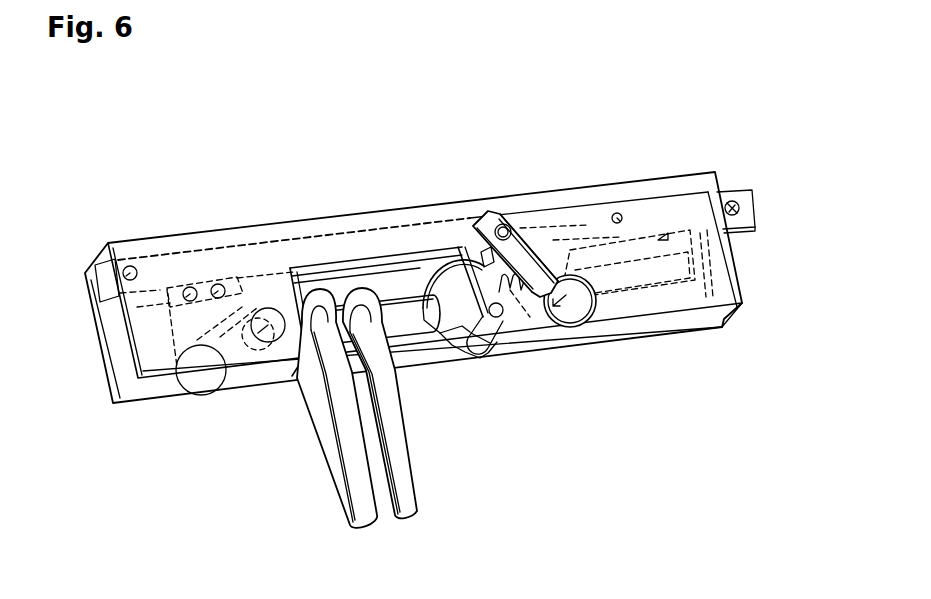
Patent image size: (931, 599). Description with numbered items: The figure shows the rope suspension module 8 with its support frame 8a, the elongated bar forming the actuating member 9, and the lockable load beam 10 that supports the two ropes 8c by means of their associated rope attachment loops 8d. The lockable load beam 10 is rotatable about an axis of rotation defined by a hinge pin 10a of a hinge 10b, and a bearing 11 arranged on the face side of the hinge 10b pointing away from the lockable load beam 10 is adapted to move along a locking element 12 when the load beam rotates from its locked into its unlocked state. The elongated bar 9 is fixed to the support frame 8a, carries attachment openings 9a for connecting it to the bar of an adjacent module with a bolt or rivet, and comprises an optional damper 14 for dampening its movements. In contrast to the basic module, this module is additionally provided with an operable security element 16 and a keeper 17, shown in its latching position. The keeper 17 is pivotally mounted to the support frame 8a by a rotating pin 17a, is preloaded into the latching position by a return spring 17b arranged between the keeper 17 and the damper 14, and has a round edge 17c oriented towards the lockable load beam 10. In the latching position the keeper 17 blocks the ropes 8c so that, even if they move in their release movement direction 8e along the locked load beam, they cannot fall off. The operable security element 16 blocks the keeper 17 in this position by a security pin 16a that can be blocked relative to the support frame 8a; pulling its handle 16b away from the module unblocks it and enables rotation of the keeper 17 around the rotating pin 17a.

The rope suspension module 8 is at (165, 194).
The support frame 8a is at (703, 322).
The ropes 8c is at (445, 524).
The rope attachment loops 8d is at (318, 386).
The release movement direction 8e is at (425, 491).
The actuating member (elongated bar) 9 is at (734, 192).
The attachment openings 9a is at (748, 207).
The lockable load beam 10 is at (410, 337).
The hinge pin 10a is at (251, 362).
The hinge 10b is at (240, 373).
The bearing 11 is at (205, 364).
The locking element 12 is at (215, 328).
The damper 14 is at (650, 278).
The operable security element 16 is at (490, 193).
The security pin 16a is at (470, 225).
The handle 16b is at (532, 228).
The keeper 17 is at (463, 357).
The rotating pin 17a is at (493, 338).
The return spring 17b is at (547, 330).
The round edge 17c is at (418, 292).